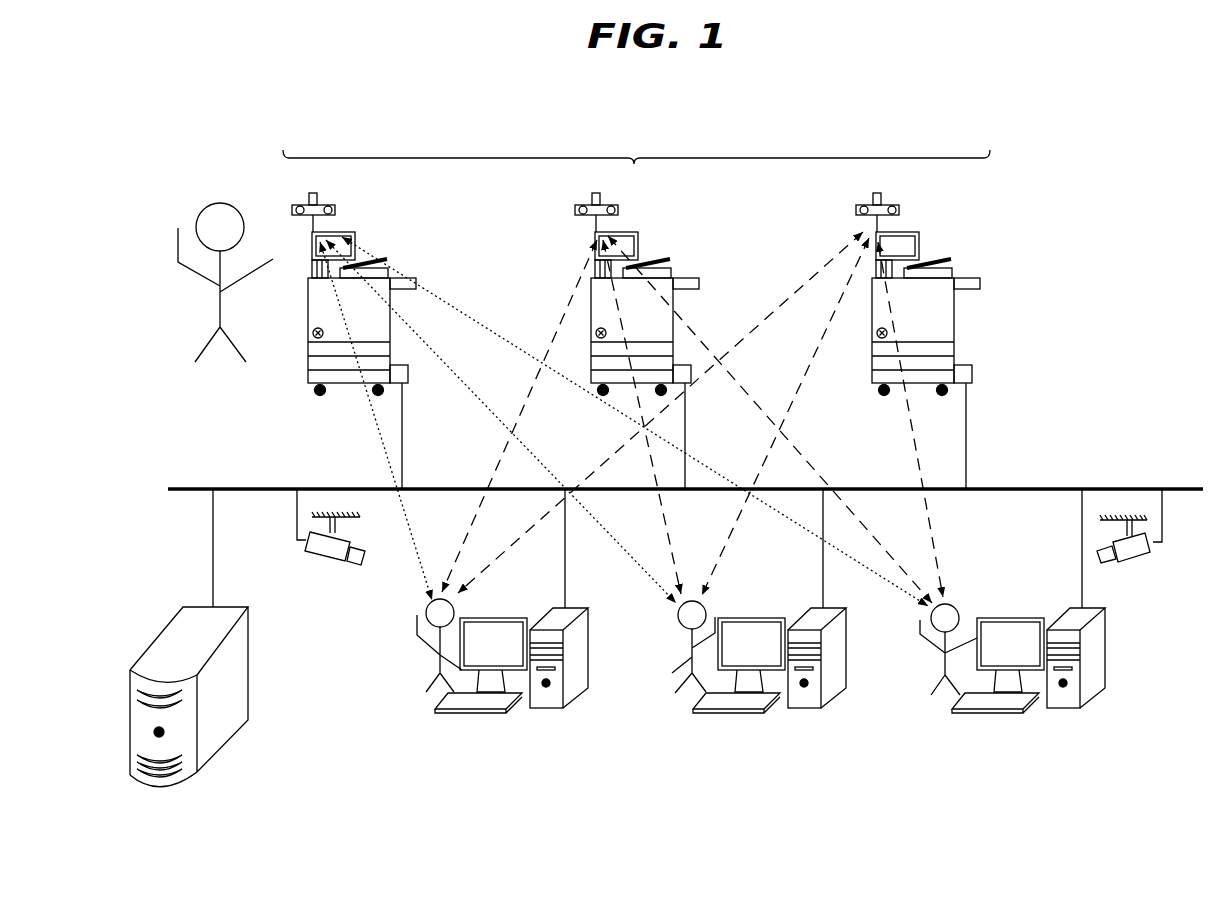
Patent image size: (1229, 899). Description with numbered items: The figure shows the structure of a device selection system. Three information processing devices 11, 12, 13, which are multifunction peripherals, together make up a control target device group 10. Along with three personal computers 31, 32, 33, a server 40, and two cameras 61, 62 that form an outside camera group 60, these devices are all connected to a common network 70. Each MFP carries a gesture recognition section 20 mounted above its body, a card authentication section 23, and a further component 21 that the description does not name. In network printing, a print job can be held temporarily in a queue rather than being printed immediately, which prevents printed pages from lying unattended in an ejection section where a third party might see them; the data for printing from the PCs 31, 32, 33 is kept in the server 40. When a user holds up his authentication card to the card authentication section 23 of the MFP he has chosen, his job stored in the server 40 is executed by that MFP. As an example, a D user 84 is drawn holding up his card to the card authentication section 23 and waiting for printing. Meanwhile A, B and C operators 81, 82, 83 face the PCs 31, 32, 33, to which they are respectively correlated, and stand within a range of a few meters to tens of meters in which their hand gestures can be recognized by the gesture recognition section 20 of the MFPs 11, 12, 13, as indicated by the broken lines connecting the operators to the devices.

The control target device group 10 is at (636, 149).
The information processing device 11 is at (377, 226).
The information processing device 12 is at (660, 226).
The information processing device 13 is at (941, 226).
The gesture recognition section 20 is at (290, 193).
The network connection box 21 is at (403, 390).
The card authentication section 23 is at (416, 280).
The personal computer 31 is at (588, 725).
The personal computer 32 is at (846, 725).
The personal computer 33 is at (1105, 725).
The server 40 is at (240, 606).
The outside camera group 60 is at (362, 605).
The camera 61 is at (346, 566).
The camera 62 is at (1154, 556).
The network 70 is at (1141, 487).
The A user 81 is at (433, 659).
The B user 82 is at (683, 637).
The C user 83 is at (938, 664).
The D user 84 is at (208, 306).